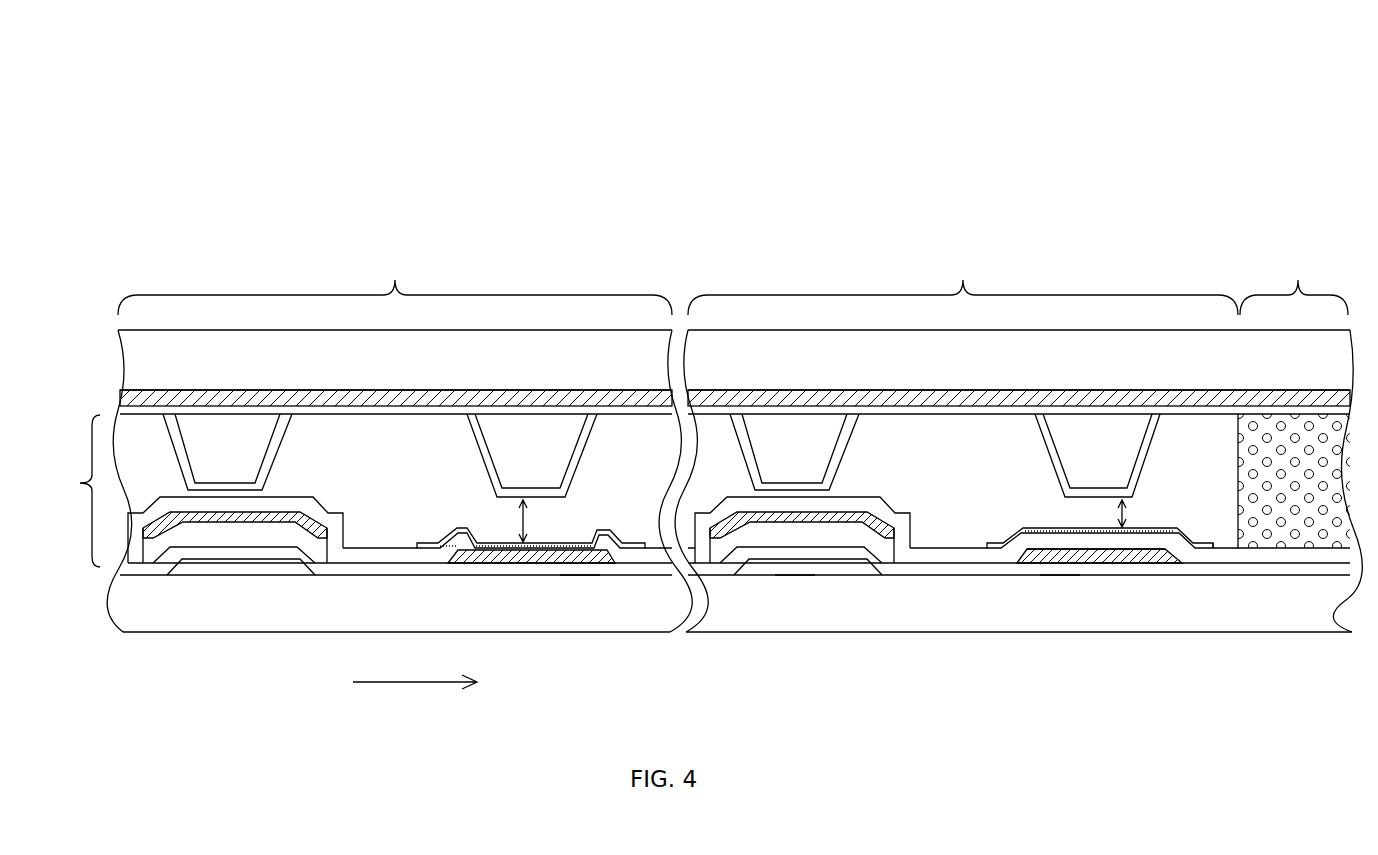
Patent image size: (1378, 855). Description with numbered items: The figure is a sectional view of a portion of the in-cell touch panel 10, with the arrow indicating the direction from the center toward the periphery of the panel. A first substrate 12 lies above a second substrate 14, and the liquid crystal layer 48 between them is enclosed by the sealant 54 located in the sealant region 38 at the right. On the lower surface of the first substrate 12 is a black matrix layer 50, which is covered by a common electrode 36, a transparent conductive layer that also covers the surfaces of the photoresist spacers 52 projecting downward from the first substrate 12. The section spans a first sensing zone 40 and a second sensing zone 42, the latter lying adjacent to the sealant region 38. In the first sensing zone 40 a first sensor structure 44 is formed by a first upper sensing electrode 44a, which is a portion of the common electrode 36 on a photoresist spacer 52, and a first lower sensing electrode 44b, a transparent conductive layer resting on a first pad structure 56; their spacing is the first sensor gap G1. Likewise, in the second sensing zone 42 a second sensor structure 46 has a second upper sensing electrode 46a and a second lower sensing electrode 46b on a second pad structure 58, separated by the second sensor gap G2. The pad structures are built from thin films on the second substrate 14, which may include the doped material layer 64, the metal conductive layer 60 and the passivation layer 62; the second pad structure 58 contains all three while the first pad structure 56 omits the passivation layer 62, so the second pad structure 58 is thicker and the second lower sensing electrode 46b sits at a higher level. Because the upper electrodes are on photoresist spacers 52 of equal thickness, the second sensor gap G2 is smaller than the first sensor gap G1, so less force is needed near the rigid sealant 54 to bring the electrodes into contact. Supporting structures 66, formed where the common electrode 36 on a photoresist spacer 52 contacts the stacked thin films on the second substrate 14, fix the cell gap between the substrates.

The in-cell touch panel 10 is at (1203, 178).
The first substrate 12 is at (410, 370).
The second substrate 14 is at (410, 612).
The common electrode 36 is at (127, 412).
The sealant region 38 is at (1294, 277).
The first sensing zone 40 is at (395, 277).
The second sensing zone 42 is at (963, 277).
The first sensor structure 44 is at (436, 481).
The first upper sensing electrode 44a is at (579, 460).
The first lower sensing electrode 44b is at (437, 540).
The second sensor structure 46 is at (1004, 481).
The second upper sensing electrode 46a is at (1144, 460).
The second lower sensing electrode 46b is at (1005, 540).
The liquid crystal layer 48 is at (74, 491).
The black matrix layer 50 is at (148, 393).
The photoresist spacer 52 is at (238, 477).
The sealant 54 is at (1303, 477).
The first pad structure 56 is at (588, 585).
The second pad structure 58 is at (1060, 592).
The metal conductive layer 60 is at (1142, 555).
The passivation layer 62 is at (1227, 553).
The doped material layer 64 is at (1108, 565).
The supporting structure 66 is at (795, 592).
The first sensor gap G1 is at (539, 521).
The second sensor gap G2 is at (1139, 513).